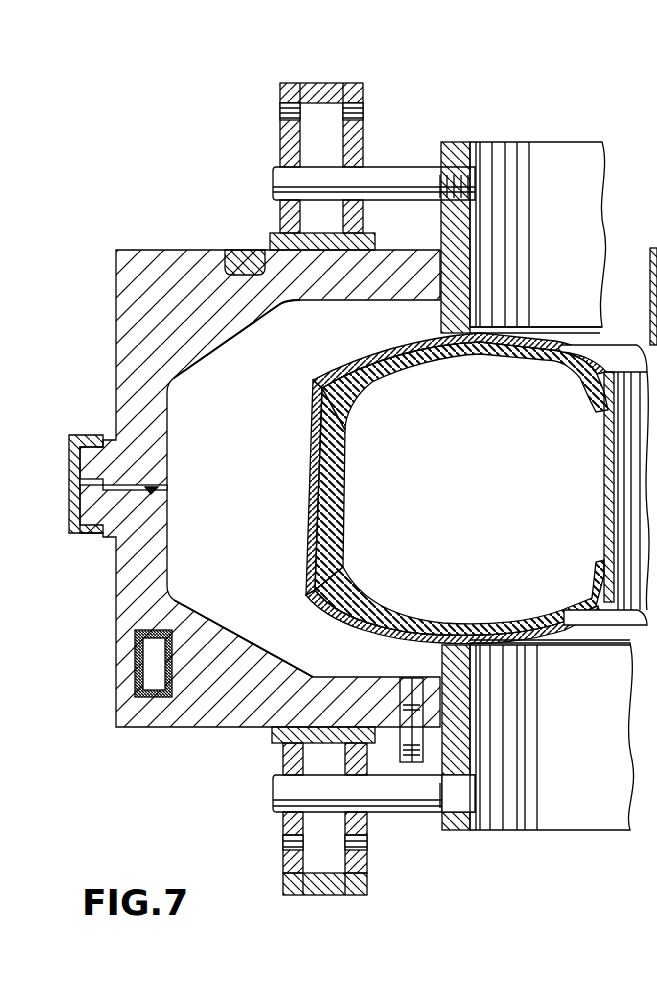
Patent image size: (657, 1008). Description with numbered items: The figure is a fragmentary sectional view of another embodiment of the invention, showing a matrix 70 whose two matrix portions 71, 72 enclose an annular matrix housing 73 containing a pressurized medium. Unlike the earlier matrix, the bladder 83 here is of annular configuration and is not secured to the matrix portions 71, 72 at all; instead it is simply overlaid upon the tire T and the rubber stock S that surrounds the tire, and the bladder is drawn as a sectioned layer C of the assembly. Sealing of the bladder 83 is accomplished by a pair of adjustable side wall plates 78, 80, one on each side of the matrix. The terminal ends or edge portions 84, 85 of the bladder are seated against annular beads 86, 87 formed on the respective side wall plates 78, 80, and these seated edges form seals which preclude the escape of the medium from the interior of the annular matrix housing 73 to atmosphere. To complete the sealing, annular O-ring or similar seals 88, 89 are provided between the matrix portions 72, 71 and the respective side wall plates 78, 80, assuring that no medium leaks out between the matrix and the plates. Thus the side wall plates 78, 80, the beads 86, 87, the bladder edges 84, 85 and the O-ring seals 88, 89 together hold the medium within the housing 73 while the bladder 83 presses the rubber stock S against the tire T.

The matrix 70 is at (205, 741).
The matrix portion 71 is at (226, 658).
The matrix portion 72 is at (272, 358).
The annular matrix housing 73 is at (252, 496).
The side wall plate 78 is at (596, 196).
The side wall plate 80 is at (600, 714).
The bladder 83 is at (416, 488).
The terminal end or edge portion 84 is at (477, 325).
The terminal end or edge portion 85 is at (490, 648).
The annular bead 86 is at (457, 347).
The annular bead 87 is at (453, 637).
The O-ring seal 88 is at (436, 286).
The O-ring seal 89 is at (432, 684).
The cup layer C is at (344, 485).
The rubber stock S is at (304, 528).
The tire T is at (565, 404).